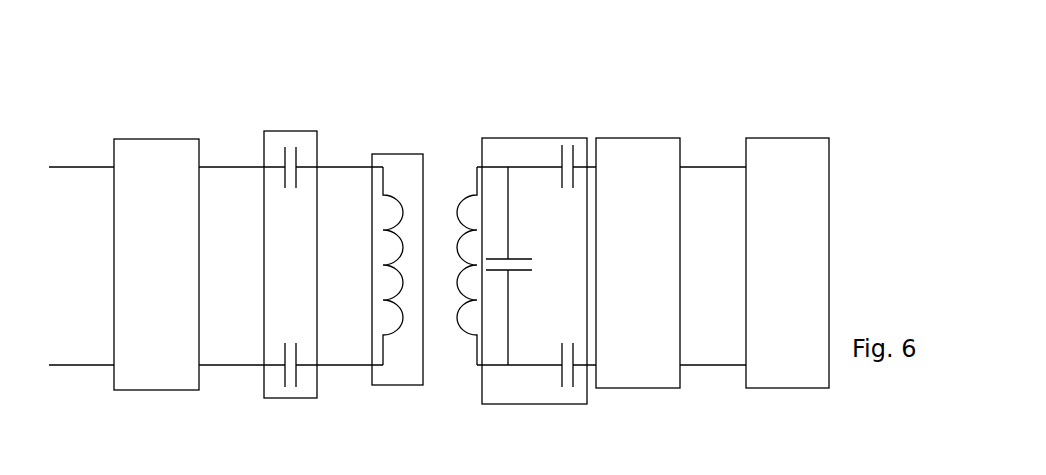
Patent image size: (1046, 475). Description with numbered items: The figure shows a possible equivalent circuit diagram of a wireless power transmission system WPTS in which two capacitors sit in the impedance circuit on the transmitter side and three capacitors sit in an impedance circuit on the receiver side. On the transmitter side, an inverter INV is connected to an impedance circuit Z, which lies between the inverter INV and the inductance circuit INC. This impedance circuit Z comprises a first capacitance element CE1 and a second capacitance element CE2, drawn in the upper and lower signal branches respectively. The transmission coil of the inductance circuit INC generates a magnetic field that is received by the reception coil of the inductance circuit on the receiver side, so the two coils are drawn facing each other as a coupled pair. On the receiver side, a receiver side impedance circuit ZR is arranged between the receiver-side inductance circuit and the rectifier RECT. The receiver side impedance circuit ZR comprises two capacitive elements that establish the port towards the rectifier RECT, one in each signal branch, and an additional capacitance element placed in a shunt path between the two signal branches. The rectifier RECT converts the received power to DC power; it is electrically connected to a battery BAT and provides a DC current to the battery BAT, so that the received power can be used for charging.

The wireless power transmission system WPTS is at (571, 67).
The inverter INV is at (128, 139).
The impedance circuit Z is at (297, 131).
The first capacitance element CE1 is at (287, 183).
The second capacitance element CE2 is at (290, 345).
The inductance circuit INC is at (392, 154).
The receiver side impedance circuit ZR is at (551, 404).
The rectifier RECT is at (625, 138).
The battery BAT is at (776, 138).